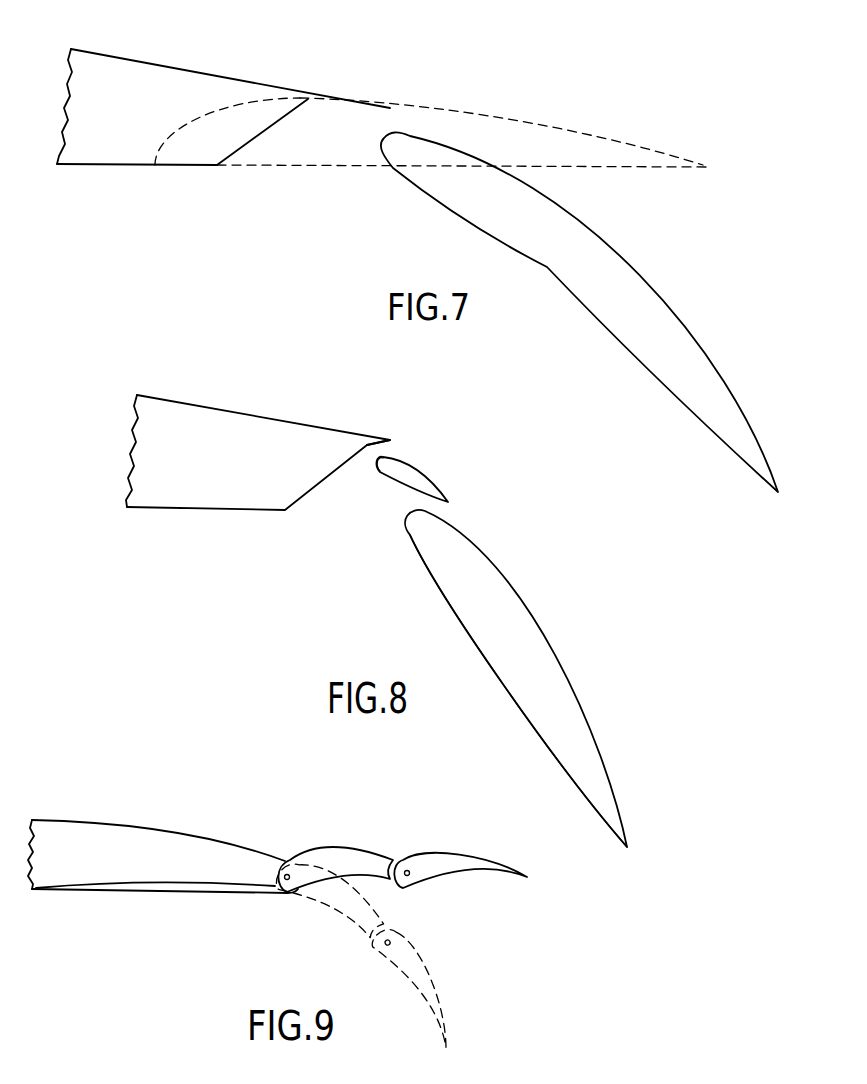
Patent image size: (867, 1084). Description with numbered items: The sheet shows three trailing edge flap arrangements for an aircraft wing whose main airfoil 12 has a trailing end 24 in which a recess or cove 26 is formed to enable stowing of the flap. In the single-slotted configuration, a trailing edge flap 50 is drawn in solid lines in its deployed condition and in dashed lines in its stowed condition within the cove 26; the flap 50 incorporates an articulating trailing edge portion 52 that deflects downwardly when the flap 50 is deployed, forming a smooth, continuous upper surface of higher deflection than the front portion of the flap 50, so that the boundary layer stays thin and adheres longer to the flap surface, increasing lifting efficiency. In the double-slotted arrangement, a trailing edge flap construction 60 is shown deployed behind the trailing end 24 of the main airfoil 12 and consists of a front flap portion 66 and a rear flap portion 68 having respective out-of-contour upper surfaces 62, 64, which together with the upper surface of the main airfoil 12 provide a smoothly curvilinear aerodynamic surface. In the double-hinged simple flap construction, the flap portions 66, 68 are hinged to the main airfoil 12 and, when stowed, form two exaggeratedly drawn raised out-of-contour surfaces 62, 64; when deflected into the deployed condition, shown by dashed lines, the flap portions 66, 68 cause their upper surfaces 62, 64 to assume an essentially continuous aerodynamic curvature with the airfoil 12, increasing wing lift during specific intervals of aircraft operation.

In FIG. 7, the main airfoil 12 is at (187, 70).
In FIG. 8, the main airfoil 12 is at (232, 408).
In FIG. 9, the main airfoil 12 is at (123, 822).
In FIG. 8, the trailing end 24 is at (392, 440).
In FIG. 7, the cove 26 is at (245, 147).
In FIG. 7, the trailing edge flap 50 is at (625, 243).
In FIG. 7, the articulating trailing edge portion 52 is at (670, 310).
In FIG. 8, the double-slotted trailing edge flap construction 60 is at (512, 560).
In FIG. 8, the out-of-contour upper surface of front flap portion 62 is at (415, 465).
In FIG. 9, the out-of-contour upper surface of front flap portion 62 is at (340, 845).
In FIG. 8, the out-of-contour upper surface of rear flap portion 64 is at (547, 630).
In FIG. 9, the out-of-contour upper surface of rear flap portion 64 is at (465, 850).
In FIG. 8, the front flap portion 66 is at (390, 467).
In FIG. 8, the rear flap portion 68 is at (493, 663).